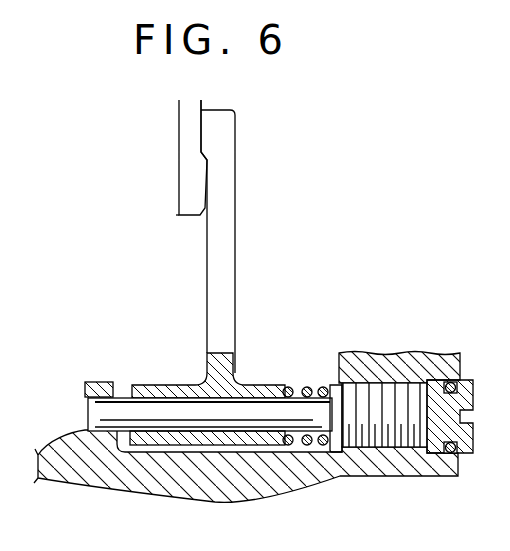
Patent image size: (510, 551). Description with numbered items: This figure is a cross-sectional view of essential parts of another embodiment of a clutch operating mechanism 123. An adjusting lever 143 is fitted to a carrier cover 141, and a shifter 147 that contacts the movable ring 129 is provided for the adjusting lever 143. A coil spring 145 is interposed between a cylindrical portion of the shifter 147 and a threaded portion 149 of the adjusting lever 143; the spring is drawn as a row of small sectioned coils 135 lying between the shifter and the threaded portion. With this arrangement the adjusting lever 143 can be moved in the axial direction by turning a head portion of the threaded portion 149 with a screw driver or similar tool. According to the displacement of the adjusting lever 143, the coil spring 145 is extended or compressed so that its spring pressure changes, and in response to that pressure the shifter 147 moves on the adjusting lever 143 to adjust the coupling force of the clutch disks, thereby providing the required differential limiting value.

The clutch operating mechanism 123 is at (376, 347).
The movable ring 129 is at (188, 161).
The spring 135 is at (296, 386).
The carrier cover 141 is at (298, 482).
The adjusting lever 143 is at (178, 407).
The coil spring 145 is at (310, 446).
The shifter 147 is at (232, 184).
The threaded portion 149 is at (405, 397).